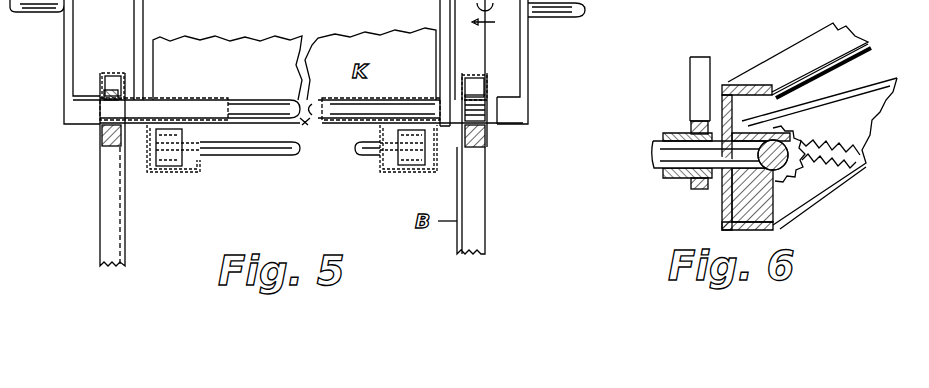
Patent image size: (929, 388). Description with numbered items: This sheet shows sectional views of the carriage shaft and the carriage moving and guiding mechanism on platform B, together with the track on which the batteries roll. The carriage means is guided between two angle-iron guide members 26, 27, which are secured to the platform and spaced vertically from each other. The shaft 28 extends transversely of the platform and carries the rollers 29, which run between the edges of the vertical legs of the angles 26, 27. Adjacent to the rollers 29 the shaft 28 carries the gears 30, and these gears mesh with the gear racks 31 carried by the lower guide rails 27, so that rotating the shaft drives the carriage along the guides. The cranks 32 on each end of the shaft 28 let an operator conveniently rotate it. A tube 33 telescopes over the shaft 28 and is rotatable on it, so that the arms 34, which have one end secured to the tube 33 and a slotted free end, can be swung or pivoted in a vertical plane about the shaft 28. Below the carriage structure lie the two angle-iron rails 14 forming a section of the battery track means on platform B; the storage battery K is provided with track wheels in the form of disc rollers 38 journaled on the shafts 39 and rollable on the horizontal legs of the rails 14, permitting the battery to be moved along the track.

In FIG. 5, the rails 14 is at (175, 172).
In FIG. 5, the guide member 26 is at (104, 73).
In FIG. 6, the guide member 26 is at (799, 60).
In FIG. 5, the guide member 27 is at (112, 150).
In FIG. 6, the guide member 27 is at (722, 216).
In FIG. 5, the shaft 28 is at (190, 100).
In FIG. 6, the shaft 28 is at (653, 157).
In FIG. 5, the rollers 29 is at (125, 74).
In FIG. 6, the rollers 29 is at (724, 92).
In FIG. 5, the gears 30 is at (104, 92).
In FIG. 6, the gears 30 is at (793, 138).
In FIG. 5, the gear racks 31 is at (102, 137).
In FIG. 6, the gear racks 31 is at (835, 153).
In FIG. 5, the cranks 32 is at (64, 56).
In FIG. 5, the tube 33 is at (220, 100).
In FIG. 6, the tube 33 is at (685, 132).
In FIG. 5, the arms 34 is at (143, 9).
In FIG. 6, the arms 34 is at (696, 78).
In FIG. 5, the disc rollers 38 is at (182, 162).
In FIG. 5, the shafts 39 is at (306, 155).